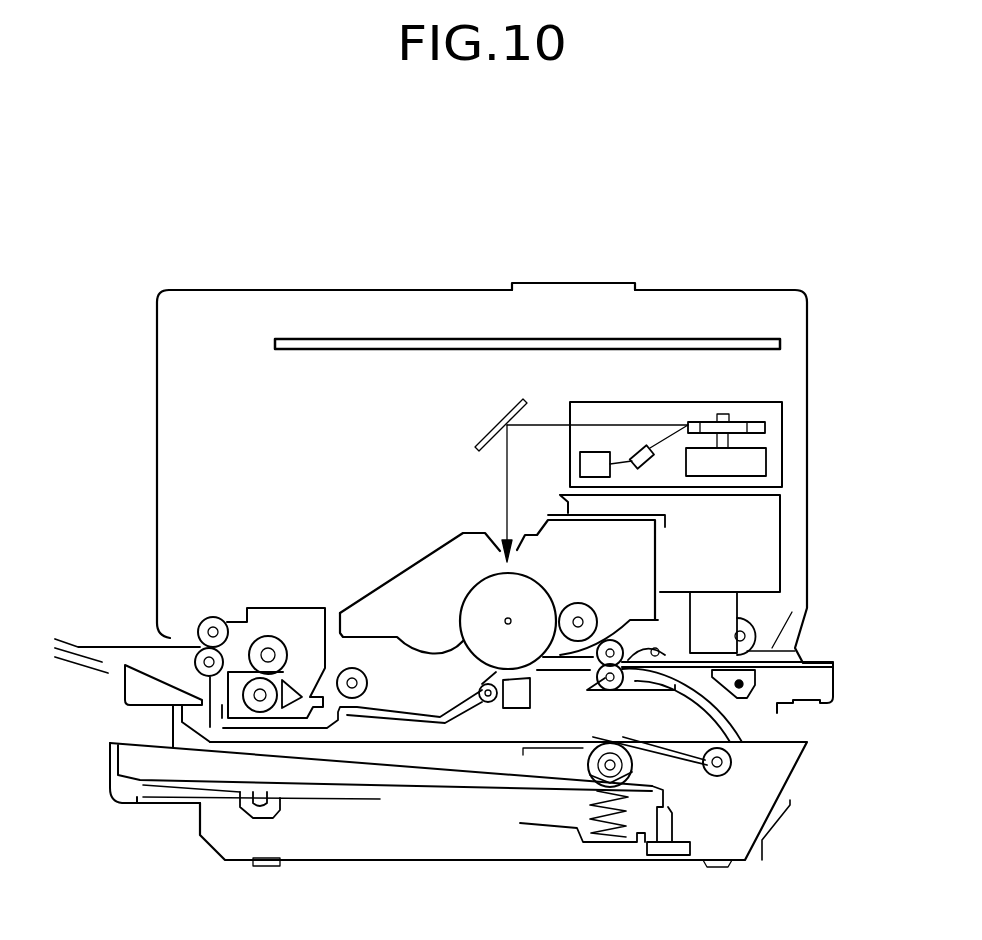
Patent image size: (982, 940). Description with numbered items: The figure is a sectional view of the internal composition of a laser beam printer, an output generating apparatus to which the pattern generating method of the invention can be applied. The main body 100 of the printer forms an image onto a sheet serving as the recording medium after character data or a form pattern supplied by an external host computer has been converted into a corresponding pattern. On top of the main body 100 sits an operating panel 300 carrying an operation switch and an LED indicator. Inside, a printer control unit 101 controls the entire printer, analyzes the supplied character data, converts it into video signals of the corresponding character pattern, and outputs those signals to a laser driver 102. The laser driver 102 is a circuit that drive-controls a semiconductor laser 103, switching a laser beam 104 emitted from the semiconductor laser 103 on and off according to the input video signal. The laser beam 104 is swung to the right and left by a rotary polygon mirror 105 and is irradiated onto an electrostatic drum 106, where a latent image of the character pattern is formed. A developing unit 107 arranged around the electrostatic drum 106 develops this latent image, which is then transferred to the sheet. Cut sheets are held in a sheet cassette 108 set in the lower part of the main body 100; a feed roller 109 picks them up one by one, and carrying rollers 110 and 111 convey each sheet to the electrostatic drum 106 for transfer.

The main body of the LBP 100 is at (725, 290).
The operating panel 300 is at (590, 282).
The printer control unit 101 is at (780, 343).
The laser driver 102 is at (580, 470).
The semiconductor laser 103 is at (638, 450).
The laser beam 104 is at (672, 424).
The rotary polygon mirror 105 is at (765, 424).
The electrostatic drum 106 is at (463, 594).
The developing unit 107 is at (380, 610).
The sheet cassette 108 is at (112, 775).
The feed roller 109 is at (597, 755).
The carrying roller 110 is at (722, 768).
The carrying roller 111 is at (616, 690).